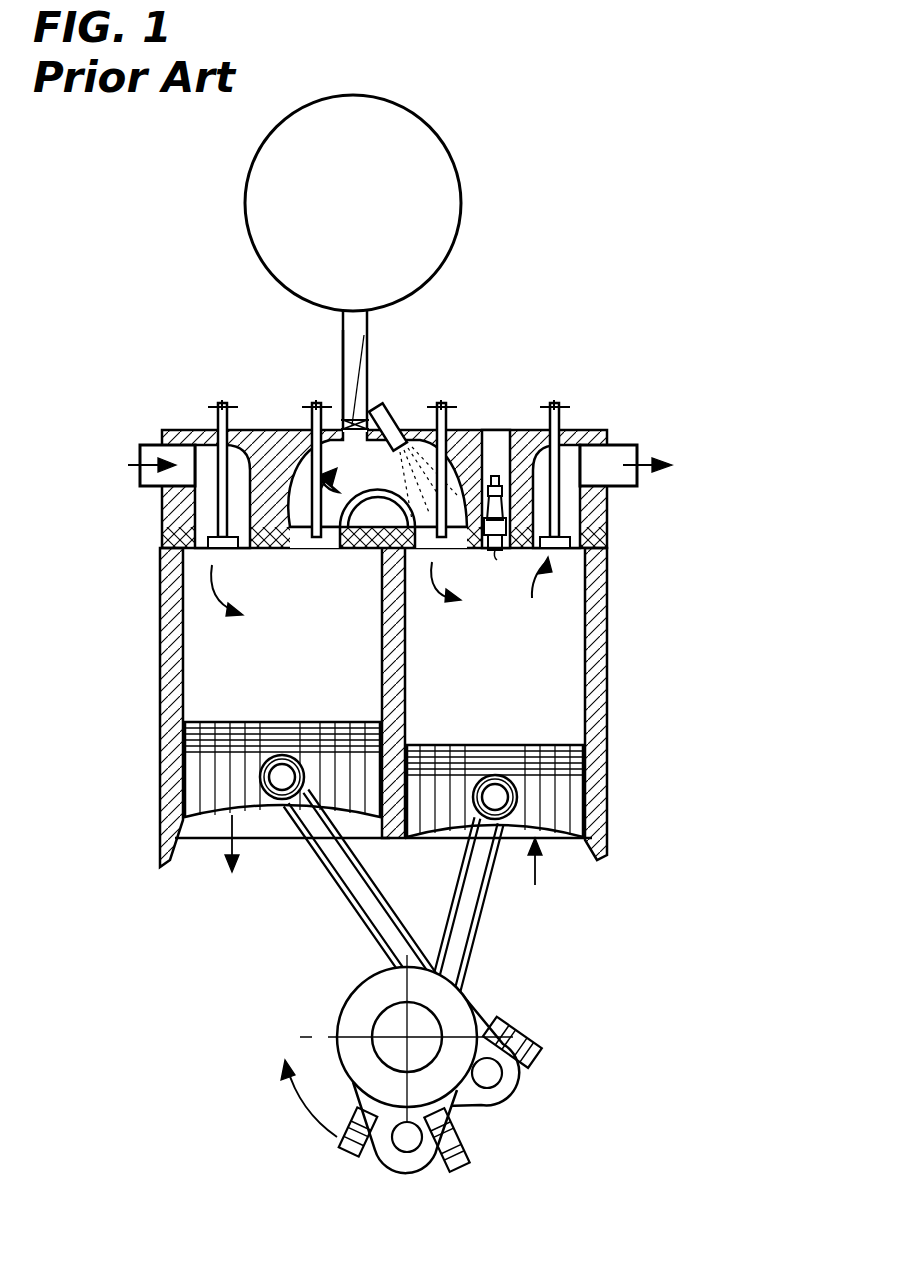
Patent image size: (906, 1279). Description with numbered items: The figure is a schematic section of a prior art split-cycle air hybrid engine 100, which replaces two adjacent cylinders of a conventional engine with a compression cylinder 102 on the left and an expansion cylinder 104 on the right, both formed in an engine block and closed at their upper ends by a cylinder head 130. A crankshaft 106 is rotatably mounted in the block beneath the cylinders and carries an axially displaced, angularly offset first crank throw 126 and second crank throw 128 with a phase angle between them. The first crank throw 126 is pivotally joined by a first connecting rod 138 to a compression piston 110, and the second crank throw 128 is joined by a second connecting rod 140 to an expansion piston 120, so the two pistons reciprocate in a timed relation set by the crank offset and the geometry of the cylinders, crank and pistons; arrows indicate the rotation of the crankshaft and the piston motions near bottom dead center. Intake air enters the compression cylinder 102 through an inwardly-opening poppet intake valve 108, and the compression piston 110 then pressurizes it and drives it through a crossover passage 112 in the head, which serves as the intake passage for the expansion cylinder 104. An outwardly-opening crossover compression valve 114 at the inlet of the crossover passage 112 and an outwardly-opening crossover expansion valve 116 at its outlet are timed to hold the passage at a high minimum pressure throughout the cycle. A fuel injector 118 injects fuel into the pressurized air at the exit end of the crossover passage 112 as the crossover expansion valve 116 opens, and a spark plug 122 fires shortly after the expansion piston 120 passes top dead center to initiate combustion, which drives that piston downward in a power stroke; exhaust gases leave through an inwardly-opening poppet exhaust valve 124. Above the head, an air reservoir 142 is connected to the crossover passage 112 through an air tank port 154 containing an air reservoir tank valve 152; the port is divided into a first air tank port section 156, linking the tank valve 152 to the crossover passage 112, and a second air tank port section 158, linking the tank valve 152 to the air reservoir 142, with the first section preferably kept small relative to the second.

The split-cycle air hybrid engine 100 is at (598, 370).
The compression cylinder 102 is at (183, 662).
The expansion cylinder 104 is at (592, 660).
The crankshaft 106 is at (388, 1022).
The poppet intake valve 108 is at (215, 418).
The compression piston 110 is at (200, 805).
The crossover passage 112 is at (336, 430).
The crossover compression (XovrC) valve 114 is at (300, 428).
The crossover expansion (XovrE) valve 116 is at (442, 415).
The fuel injector 118 is at (392, 412).
The expansion piston 120 is at (566, 820).
The spark plug 122 is at (495, 476).
The poppet exhaust valve 124 is at (556, 413).
The first crank throw 126 is at (490, 1102).
The second crank throw 128 is at (400, 1162).
The cylinder head 130 is at (265, 437).
The first connecting rod 138 is at (356, 916).
The second connecting rod 140 is at (458, 936).
The air reservoir 142 is at (432, 122).
The air reservoir tank valve 152 is at (366, 355).
The air tank port 154 is at (345, 331).
The first air tank port section 156 is at (378, 400).
The second air tank port section 158 is at (366, 332).